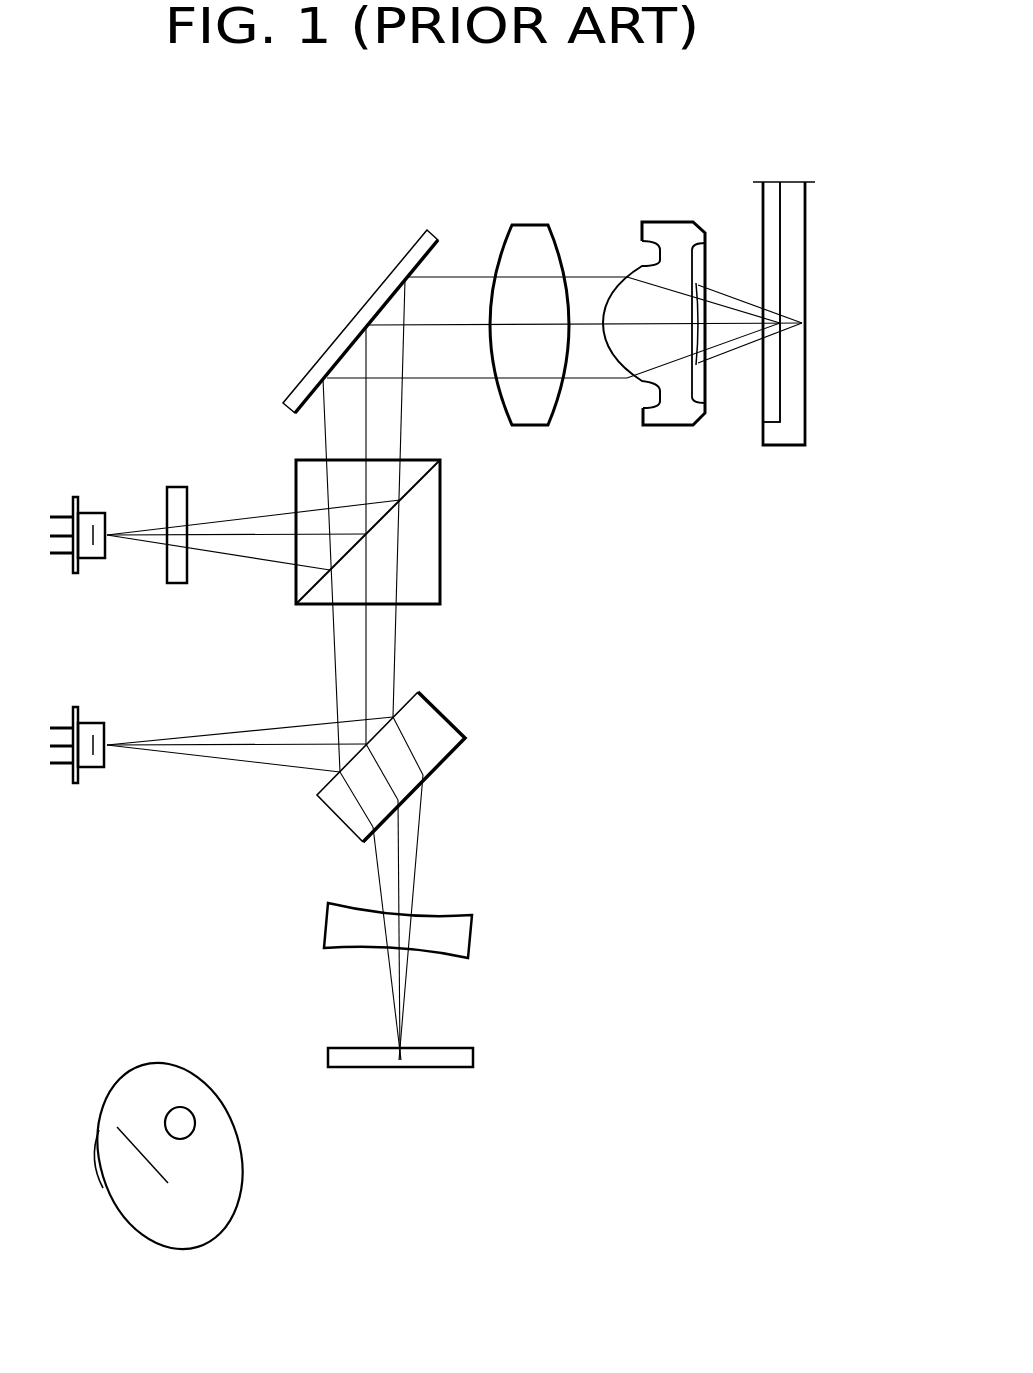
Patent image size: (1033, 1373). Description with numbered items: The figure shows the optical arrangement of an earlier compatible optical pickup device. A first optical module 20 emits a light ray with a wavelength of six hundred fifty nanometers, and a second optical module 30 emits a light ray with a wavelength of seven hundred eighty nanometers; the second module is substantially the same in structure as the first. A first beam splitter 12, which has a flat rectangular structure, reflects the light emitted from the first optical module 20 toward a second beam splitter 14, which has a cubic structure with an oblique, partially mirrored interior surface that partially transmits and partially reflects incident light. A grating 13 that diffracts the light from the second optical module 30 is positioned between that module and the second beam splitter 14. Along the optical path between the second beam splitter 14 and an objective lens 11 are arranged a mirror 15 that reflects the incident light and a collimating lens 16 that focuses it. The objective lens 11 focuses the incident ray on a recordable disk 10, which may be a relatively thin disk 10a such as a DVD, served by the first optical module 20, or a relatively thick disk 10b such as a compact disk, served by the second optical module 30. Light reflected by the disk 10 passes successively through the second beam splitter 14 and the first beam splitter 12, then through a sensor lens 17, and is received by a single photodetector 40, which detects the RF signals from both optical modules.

The recordable disk 10 is at (769, 393).
The relatively thin disk 10a is at (768, 400).
The relatively thick disk 10b is at (793, 422).
The objective lens 11 is at (670, 222).
The first beam splitter 12 is at (447, 718).
The grating 13 is at (178, 485).
The second beam splitter 14 is at (441, 527).
The mirror 15 is at (385, 277).
The collimating lens 16 is at (528, 222).
The sensor lens 17 is at (452, 920).
The first optical module 20 is at (91, 788).
The second optical module 30 is at (91, 578).
The photodetector 40 is at (460, 1047).